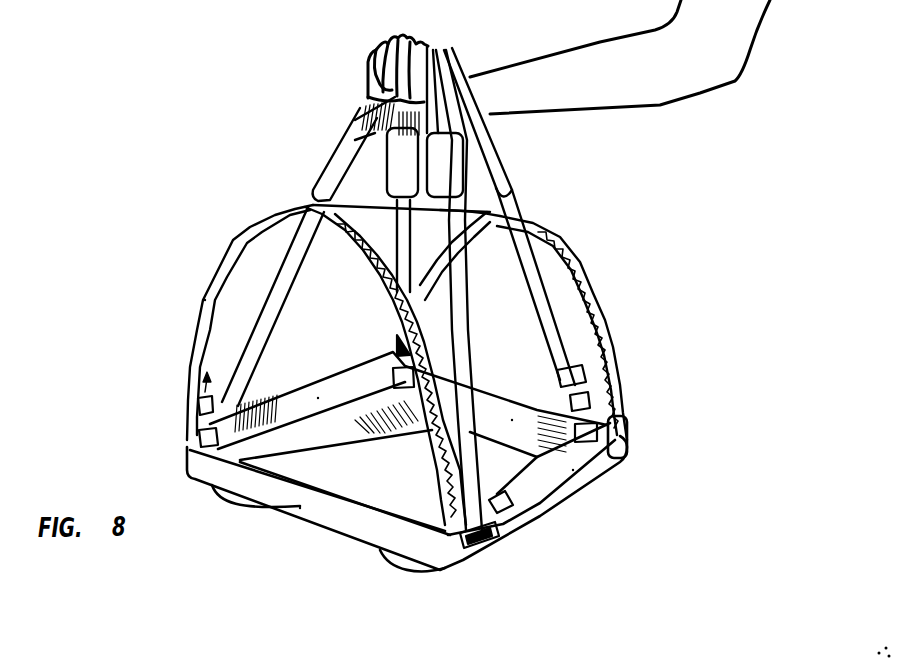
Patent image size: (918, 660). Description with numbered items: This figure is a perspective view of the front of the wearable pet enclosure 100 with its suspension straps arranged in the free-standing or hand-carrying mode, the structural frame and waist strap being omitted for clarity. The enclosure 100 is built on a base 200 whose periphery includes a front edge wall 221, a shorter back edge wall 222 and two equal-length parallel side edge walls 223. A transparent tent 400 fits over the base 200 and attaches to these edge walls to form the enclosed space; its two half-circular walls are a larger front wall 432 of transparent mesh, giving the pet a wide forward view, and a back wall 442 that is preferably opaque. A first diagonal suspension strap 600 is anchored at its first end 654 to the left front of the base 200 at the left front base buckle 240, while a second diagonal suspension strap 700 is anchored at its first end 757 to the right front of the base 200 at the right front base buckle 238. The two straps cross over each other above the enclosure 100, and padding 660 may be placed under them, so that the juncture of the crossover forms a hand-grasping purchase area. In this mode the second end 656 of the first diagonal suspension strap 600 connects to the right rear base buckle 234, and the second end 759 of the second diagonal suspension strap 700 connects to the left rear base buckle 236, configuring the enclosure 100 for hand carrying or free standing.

The enclosure 100 is at (222, 213).
The base 200 is at (445, 548).
The front edge wall 221 is at (300, 497).
The back edge wall 222 is at (510, 423).
The side edge walls 223 is at (318, 398).
The right rear base buckle 234 is at (383, 380).
The left rear base buckle 236 is at (600, 413).
The right front base buckle 238 is at (198, 404).
The left front base buckle 240 is at (500, 508).
The tent 400 is at (585, 258).
The front wall 432 is at (227, 338).
The back wall 442 is at (603, 300).
The first diagonal suspension strap 600 is at (347, 202).
The first end of the first diagonal suspension strap 654 is at (495, 540).
The second end of the first diagonal suspension strap 656 is at (400, 352).
The padding 660 is at (437, 147).
The second diagonal suspension strap 700 is at (503, 203).
The first end of the second diagonal suspension strap 757 is at (199, 436).
The second end of the second diagonal suspension strap 759 is at (560, 382).